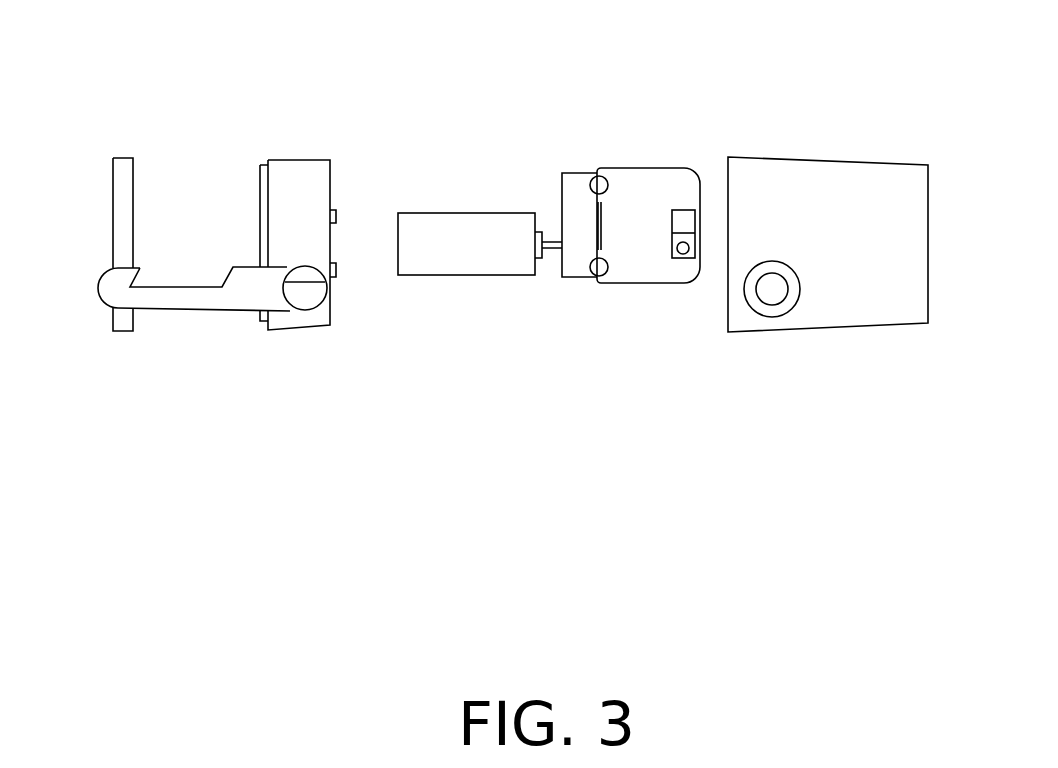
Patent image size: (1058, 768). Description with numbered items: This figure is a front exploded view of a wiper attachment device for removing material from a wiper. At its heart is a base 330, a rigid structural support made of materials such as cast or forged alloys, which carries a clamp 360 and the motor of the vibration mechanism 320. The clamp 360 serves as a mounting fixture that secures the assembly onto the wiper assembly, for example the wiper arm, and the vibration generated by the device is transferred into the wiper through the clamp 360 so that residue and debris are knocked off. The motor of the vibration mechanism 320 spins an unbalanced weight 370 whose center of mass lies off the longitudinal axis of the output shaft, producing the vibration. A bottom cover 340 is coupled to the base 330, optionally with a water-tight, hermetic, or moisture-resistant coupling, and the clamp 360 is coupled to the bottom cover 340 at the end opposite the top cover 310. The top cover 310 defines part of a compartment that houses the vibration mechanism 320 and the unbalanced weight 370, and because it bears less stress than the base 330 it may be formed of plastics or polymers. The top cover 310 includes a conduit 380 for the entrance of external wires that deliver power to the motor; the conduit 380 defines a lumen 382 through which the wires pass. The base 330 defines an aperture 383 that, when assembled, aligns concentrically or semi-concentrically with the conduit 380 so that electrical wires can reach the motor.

The top cover 310 is at (855, 157).
The vibration mechanism 320 is at (501, 279).
The base 330 is at (323, 327).
The bottom cover 340 is at (125, 158).
The clamp 360 is at (178, 287).
The unbalanced weight 370 is at (645, 168).
The conduit 380 is at (799, 304).
The lumen 382 is at (769, 294).
The aperture 383 is at (329, 297).